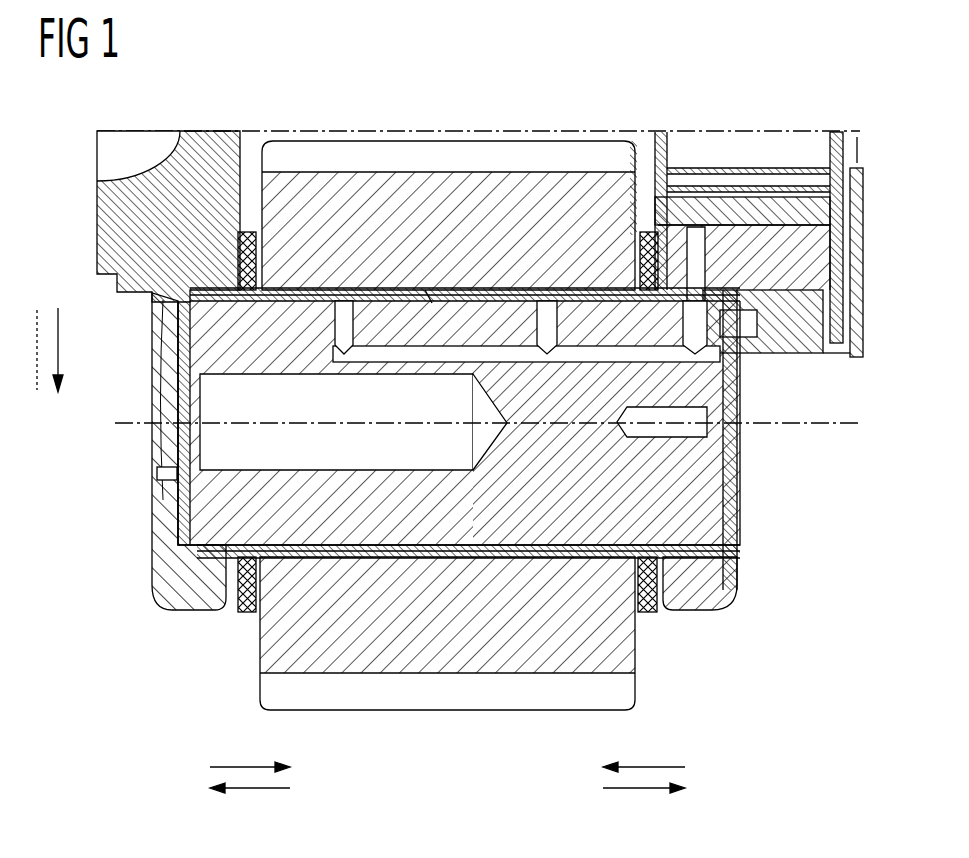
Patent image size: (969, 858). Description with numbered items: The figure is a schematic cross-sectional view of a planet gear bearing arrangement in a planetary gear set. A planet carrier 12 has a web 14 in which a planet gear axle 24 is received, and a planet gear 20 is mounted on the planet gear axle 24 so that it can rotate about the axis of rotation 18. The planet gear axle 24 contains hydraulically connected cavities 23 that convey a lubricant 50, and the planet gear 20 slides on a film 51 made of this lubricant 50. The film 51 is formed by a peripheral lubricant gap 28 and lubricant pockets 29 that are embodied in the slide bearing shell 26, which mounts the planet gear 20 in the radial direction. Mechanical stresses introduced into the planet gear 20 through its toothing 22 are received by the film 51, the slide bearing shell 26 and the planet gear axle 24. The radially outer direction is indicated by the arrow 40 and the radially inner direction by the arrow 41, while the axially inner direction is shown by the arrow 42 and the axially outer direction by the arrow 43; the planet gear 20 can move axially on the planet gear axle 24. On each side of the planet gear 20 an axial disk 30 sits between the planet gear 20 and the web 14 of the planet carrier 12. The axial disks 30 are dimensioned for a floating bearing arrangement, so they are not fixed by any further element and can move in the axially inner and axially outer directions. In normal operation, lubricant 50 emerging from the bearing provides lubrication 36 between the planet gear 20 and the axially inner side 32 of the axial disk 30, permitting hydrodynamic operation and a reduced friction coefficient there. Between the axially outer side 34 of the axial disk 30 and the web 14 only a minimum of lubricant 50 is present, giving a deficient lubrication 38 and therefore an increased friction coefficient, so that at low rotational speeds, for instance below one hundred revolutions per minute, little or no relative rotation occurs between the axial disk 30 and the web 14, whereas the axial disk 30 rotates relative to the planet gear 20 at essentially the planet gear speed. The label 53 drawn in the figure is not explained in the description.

The planet carrier 12 is at (97, 240).
The web 14 is at (174, 613).
The axis of rotation 18 is at (835, 426).
The planet gear 20 is at (412, 710).
The toothing 22 is at (570, 148).
The cavities 23 is at (500, 423).
The planet gear axle 24 is at (738, 492).
The slide bearing shell 26 is at (331, 560).
The peripheral lubricant gap 28 is at (447, 560).
The lubricant pockets 29 is at (376, 290).
The axial disk 30 is at (243, 614).
The axially inner side 32 is at (465, 272).
The axially outer side 34 is at (461, 261).
The lubrication 36 is at (262, 262).
The deficient lubrication 38 is at (238, 262).
The arrow (radially outer direction) 40 is at (38, 390).
The arrow (radially inner direction) 41 is at (60, 343).
The arrow (axially inner direction) 42 is at (240, 767).
The arrow (axially outer direction) 43 is at (262, 788).
The lubricant 50 is at (320, 378).
The film 51 is at (430, 292).
The pin recess 53 is at (571, 362).